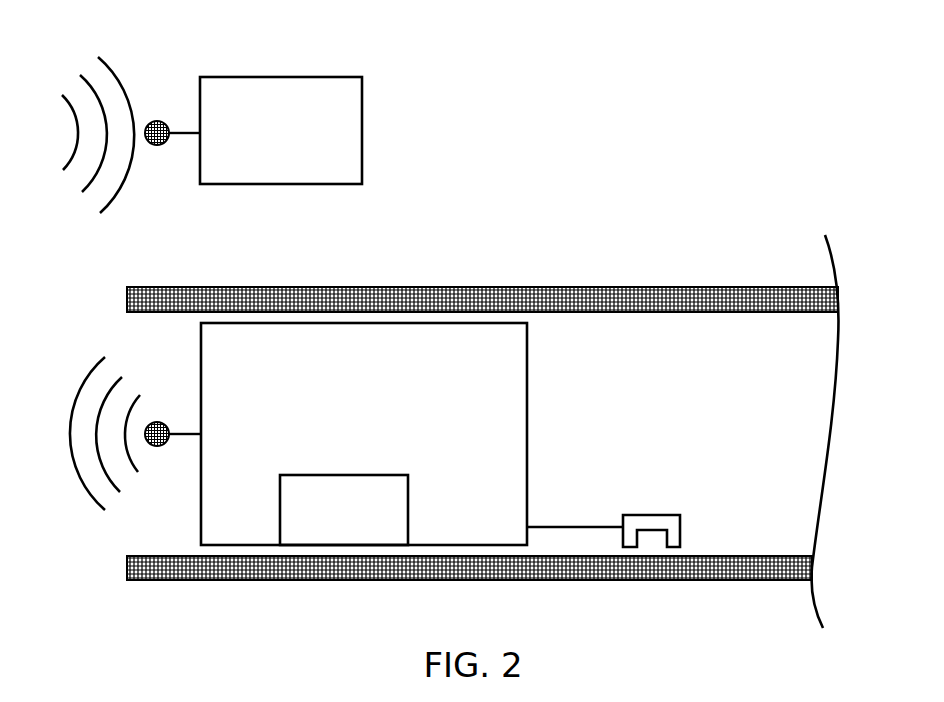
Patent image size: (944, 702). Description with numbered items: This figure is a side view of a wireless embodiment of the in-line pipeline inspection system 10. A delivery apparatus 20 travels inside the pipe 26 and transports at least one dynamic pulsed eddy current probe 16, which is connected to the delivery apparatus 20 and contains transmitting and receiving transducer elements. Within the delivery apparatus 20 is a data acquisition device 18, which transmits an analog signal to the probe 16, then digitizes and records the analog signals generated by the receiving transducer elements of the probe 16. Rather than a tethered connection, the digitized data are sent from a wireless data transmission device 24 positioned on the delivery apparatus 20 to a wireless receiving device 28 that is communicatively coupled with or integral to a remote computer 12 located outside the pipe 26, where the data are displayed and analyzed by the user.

The inspection system 10 is at (641, 70).
The remote computer 12 is at (350, 145).
The dynamic pulsed eddy current probe 16 is at (647, 513).
The data acquisition device 18 is at (312, 493).
The delivery apparatus 20 is at (505, 359).
The wireless data transmission device 24 is at (157, 422).
The pipe 26 is at (613, 289).
The wireless receiving device 28 is at (157, 121).